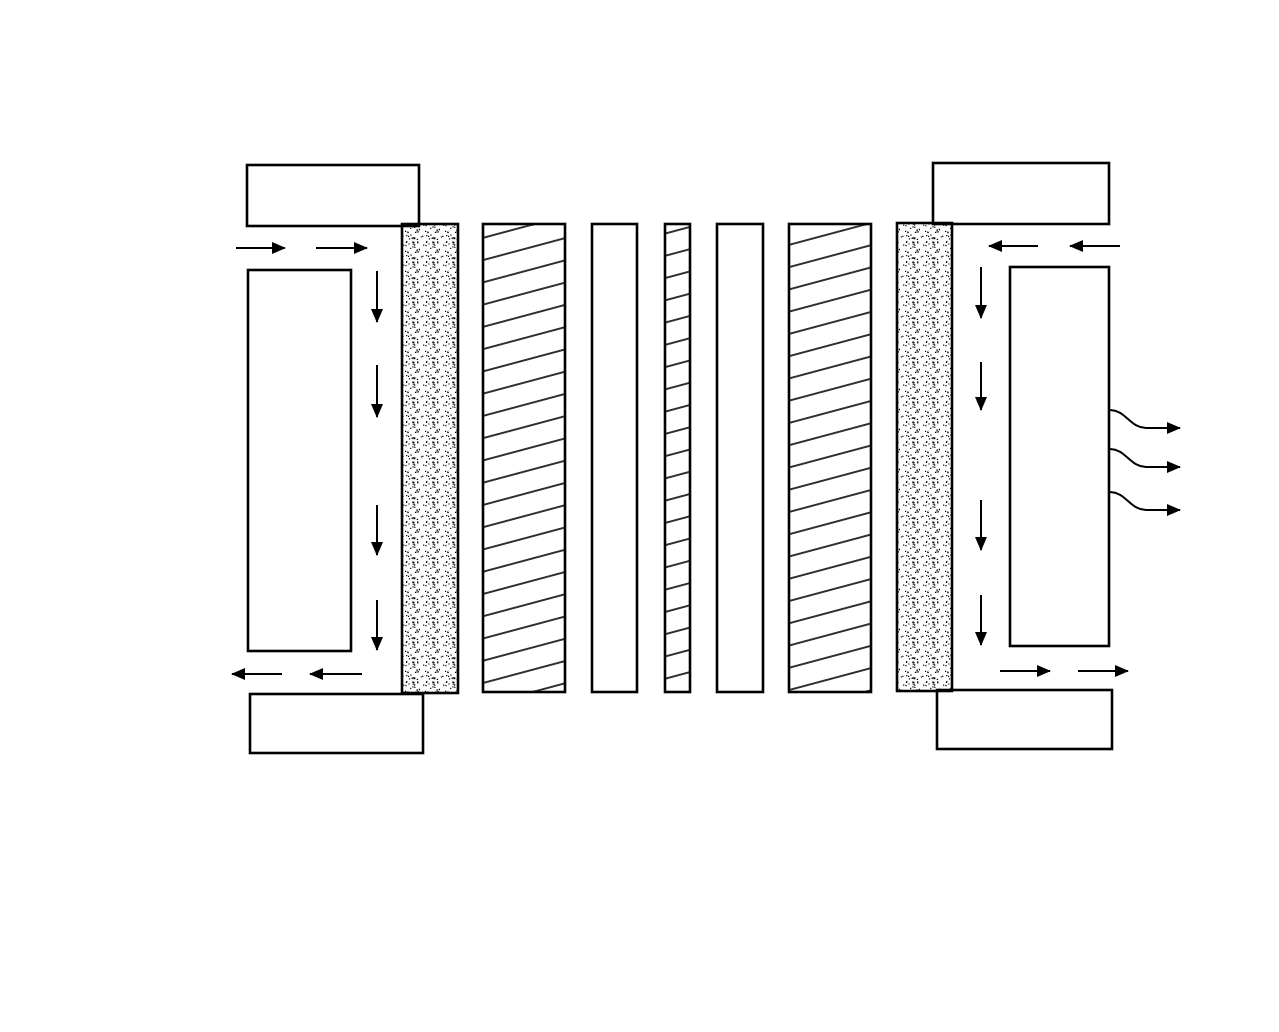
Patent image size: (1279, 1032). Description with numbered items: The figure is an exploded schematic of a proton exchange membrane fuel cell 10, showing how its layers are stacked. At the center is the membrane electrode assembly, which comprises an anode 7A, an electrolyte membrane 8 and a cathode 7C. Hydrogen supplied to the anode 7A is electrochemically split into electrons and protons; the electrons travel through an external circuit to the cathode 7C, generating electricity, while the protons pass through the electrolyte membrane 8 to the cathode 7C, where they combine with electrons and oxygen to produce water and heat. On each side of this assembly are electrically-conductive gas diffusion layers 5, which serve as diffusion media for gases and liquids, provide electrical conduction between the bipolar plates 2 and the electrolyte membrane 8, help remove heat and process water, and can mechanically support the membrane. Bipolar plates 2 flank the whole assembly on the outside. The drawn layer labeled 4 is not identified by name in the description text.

The PEM fuel cell 10 is at (878, 86).
The bipolar plates 2 is at (313, 753).
The gas diffusion layer 4 is at (437, 694).
The gas diffusion layers 5 is at (539, 692).
The anode 7A is at (623, 692).
The electrolyte membrane 8 is at (683, 692).
The cathode 7C is at (750, 692).